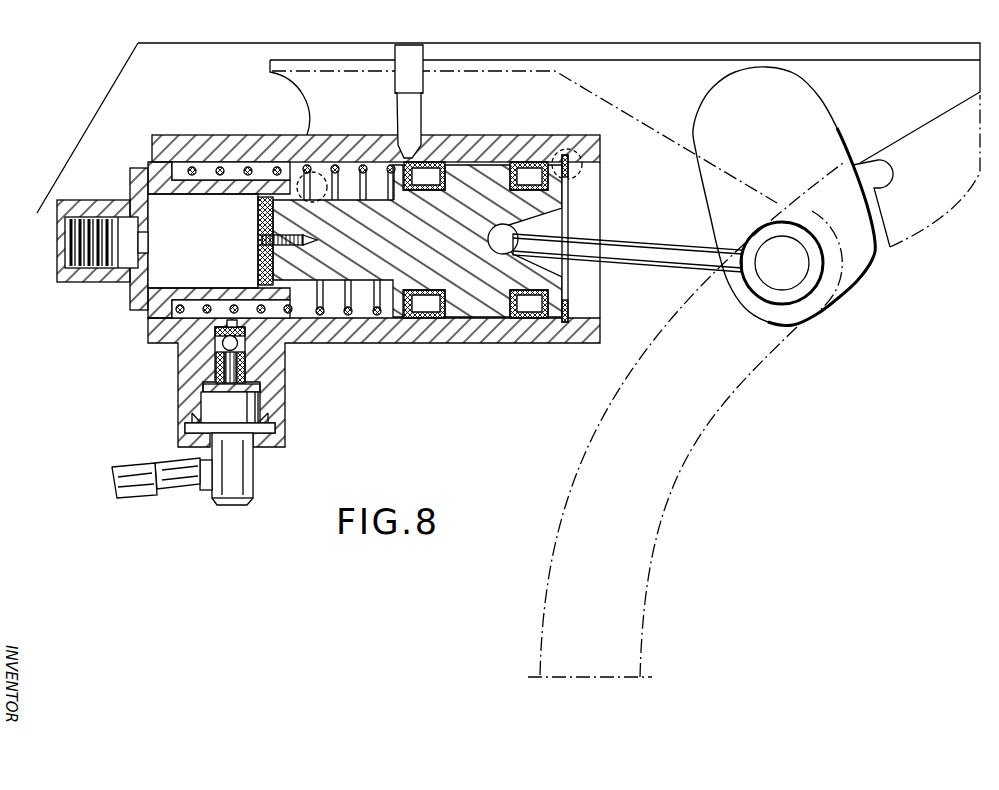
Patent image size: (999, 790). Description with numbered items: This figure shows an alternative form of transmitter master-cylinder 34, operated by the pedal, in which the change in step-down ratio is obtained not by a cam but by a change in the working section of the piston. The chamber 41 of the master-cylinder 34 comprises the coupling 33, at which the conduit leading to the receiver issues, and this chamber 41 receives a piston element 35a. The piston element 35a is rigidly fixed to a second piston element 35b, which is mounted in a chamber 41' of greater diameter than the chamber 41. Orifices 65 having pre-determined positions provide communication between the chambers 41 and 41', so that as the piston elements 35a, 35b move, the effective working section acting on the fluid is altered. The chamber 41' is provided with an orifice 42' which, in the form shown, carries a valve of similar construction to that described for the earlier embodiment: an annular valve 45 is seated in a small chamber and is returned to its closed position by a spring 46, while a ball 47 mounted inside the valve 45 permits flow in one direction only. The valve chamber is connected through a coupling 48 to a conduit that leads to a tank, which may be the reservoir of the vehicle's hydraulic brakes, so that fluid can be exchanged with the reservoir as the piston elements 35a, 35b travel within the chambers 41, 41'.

The coupling 33 is at (80, 280).
The transmitter master-cylinder 34 is at (356, 343).
The piston element 35a is at (281, 198).
The piston element 35b is at (444, 164).
The chamber 41 is at (203, 241).
The chamber 41' is at (285, 209).
The orifice 42' is at (207, 292).
The annular valve 45 is at (221, 345).
The spring 46 is at (218, 368).
The ball 47 is at (241, 349).
The coupling 48 is at (180, 492).
The orifices 65 is at (233, 193).